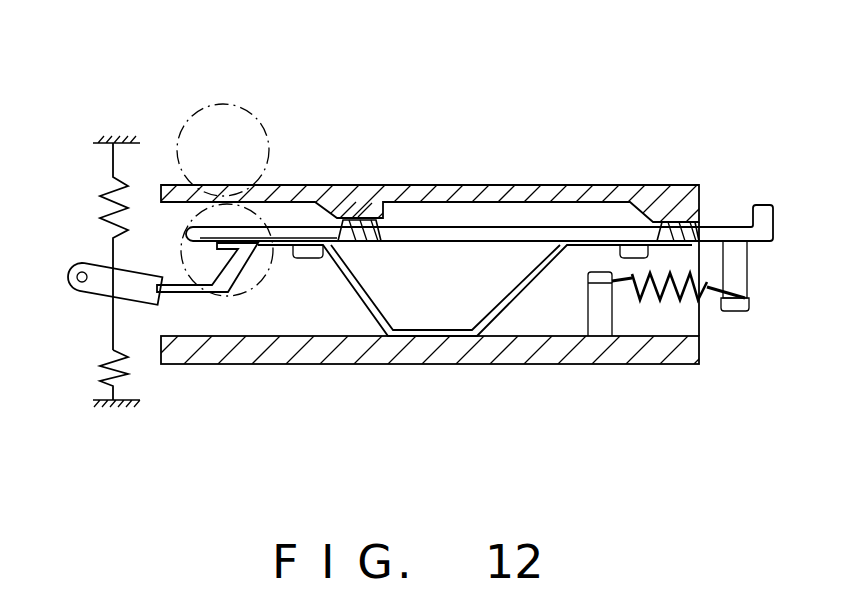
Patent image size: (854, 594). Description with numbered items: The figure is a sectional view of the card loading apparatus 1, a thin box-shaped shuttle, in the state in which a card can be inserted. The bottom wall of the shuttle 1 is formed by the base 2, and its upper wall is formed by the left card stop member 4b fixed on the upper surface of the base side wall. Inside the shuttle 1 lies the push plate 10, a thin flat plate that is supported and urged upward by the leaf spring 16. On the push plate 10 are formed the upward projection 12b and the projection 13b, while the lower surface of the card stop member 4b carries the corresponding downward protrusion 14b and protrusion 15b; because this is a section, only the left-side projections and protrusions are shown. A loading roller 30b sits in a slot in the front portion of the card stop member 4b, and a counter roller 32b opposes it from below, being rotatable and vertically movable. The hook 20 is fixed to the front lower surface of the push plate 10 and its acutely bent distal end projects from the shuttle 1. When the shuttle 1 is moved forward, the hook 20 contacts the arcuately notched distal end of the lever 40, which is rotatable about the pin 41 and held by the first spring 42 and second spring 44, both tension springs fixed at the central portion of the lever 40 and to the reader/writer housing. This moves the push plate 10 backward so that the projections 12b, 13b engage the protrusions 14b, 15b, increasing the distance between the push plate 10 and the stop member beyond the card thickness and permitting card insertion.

The card loading apparatus 1 is at (421, 148).
The base 2 is at (581, 366).
The left card stop member 4b is at (550, 197).
The push plate 10 is at (431, 166).
The upward projection 12b is at (703, 212).
The projection 13b is at (363, 243).
The downward protrusion 14b is at (668, 198).
The protrusion 15b is at (355, 208).
The leaf spring 16 is at (370, 318).
The hook 20 is at (188, 293).
The loading roller 30b is at (267, 134).
The counter roller 32b is at (268, 281).
The lever 40 is at (91, 260).
The pin 41 is at (78, 281).
The first spring 42 is at (100, 193).
The second spring 44 is at (100, 358).